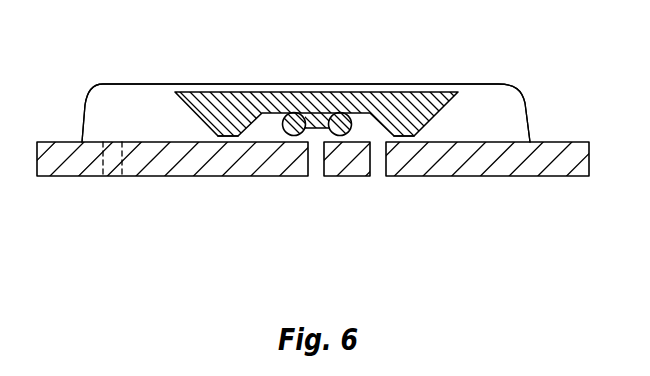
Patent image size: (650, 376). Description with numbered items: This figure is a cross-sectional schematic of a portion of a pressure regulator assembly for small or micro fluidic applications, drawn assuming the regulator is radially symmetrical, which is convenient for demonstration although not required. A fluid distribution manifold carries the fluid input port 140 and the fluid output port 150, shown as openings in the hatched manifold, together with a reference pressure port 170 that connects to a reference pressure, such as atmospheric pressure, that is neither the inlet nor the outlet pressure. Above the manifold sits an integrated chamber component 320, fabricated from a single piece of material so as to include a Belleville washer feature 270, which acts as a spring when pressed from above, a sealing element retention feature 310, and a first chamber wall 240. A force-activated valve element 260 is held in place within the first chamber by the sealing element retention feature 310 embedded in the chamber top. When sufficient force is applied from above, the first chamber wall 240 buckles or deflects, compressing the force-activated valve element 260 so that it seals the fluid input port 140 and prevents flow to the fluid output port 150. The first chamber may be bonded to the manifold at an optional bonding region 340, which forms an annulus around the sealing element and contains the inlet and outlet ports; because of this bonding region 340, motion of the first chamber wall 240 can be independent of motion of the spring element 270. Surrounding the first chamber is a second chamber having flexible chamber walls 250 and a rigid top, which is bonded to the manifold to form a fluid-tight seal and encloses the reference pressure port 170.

The fluid input port 140 is at (315, 162).
The fluid output port 150 is at (378, 158).
The reference pressure port 170 is at (114, 160).
The first chamber wall 240 is at (385, 124).
The flexible chamber walls 250 is at (528, 118).
The force-activated valve element 260 is at (300, 139).
The Belleville washer feature 270 is at (453, 108).
The sealing element retention feature 310 is at (380, 77).
The integrated chamber component 320 is at (213, 102).
The bonding region 340 is at (232, 138).